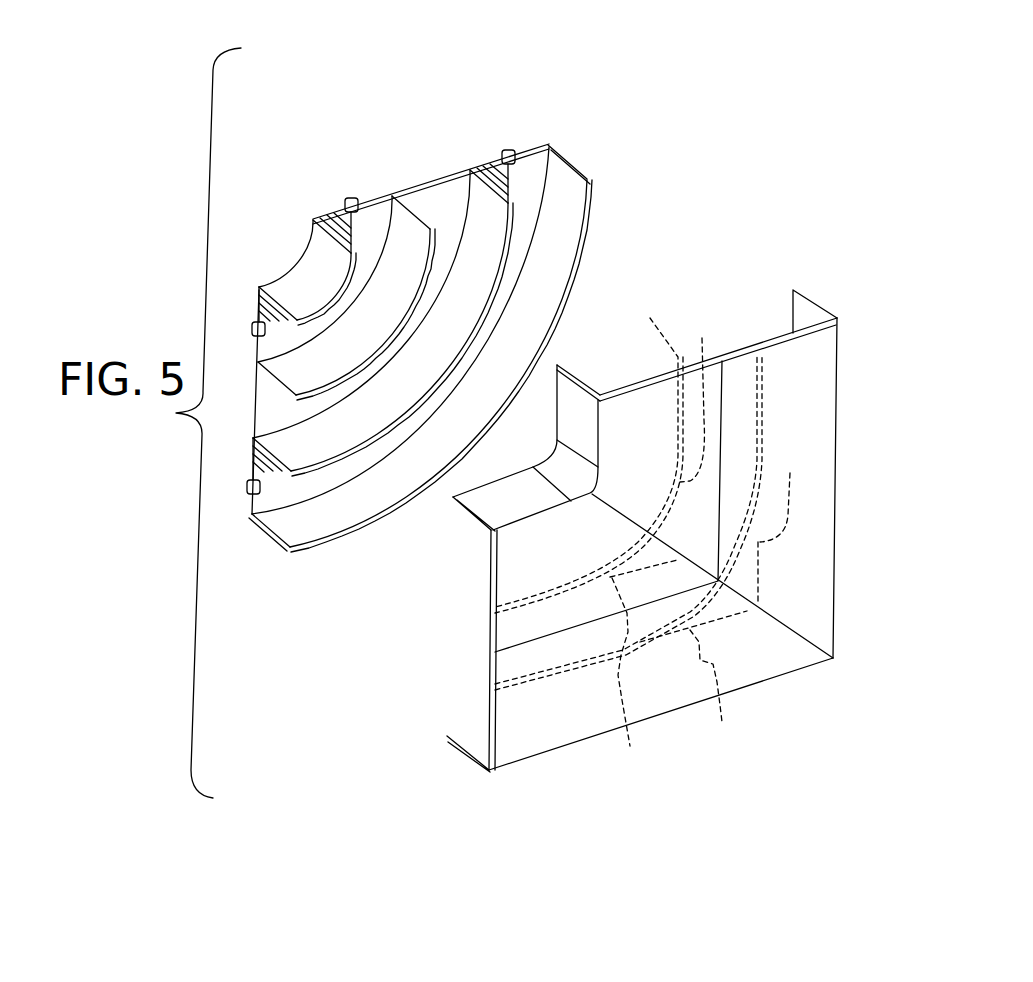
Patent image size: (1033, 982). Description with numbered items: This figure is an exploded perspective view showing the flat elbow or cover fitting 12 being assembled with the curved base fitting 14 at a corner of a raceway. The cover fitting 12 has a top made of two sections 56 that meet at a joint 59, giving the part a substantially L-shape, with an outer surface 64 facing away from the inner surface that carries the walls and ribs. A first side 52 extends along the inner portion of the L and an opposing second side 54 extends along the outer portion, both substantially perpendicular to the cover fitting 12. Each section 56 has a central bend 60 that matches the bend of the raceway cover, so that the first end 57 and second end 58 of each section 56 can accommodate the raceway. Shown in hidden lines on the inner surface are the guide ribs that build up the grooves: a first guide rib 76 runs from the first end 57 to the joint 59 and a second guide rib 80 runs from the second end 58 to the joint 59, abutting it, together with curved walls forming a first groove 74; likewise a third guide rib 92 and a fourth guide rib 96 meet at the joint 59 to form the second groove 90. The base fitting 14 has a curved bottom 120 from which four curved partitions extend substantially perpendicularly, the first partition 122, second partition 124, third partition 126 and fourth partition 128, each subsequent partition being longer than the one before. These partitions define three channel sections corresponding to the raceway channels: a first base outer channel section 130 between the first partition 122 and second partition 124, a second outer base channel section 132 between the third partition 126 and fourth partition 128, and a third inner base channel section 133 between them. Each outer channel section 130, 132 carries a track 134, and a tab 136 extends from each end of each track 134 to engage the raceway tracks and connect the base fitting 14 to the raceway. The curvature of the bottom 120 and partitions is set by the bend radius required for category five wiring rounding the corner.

The cover fitting 12 is at (675, 772).
The base fitting 14 is at (434, 74).
The first side 52 is at (508, 502).
The second side 54 is at (806, 311).
The section 56 is at (545, 734).
The first end 57 is at (627, 382).
The second end 58 is at (494, 597).
The joint 59 is at (794, 633).
The central bend 60 is at (726, 355).
The outer surface 64 is at (820, 365).
The first groove 74 is at (589, 451).
The first guide rib 76 is at (625, 677).
The second guide rib 80 is at (697, 398).
The second groove 90 is at (493, 690).
The third guide rib 92 is at (709, 688).
The fourth guide rib 96 is at (783, 524).
The curved bottom 120 is at (556, 142).
The first partition 122 is at (312, 257).
The second partition 124 is at (400, 228).
The third partition 126 is at (528, 169).
The fourth partition 128 is at (569, 192).
The first base outer channel section 130 is at (337, 224).
The second outer base channel section 132 is at (534, 142).
The third inner base channel section 133 is at (431, 205).
The track 134 is at (258, 318).
The tab 136 is at (352, 194).